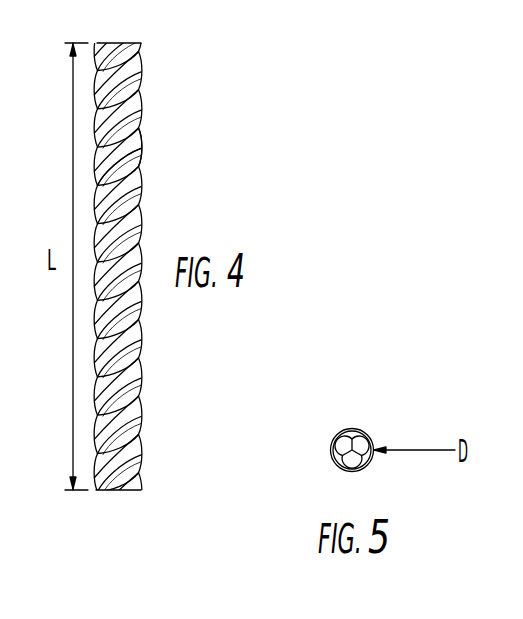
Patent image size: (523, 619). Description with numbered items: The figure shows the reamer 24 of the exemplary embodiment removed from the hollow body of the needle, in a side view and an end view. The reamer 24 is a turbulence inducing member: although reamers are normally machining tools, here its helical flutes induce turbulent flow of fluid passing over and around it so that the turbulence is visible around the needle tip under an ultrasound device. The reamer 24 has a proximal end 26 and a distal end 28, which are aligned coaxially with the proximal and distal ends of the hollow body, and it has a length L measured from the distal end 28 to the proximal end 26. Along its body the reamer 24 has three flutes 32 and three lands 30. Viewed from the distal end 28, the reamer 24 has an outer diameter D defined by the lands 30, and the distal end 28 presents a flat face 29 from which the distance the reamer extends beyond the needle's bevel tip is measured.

In FIG. 4, the reamer 24 is at (157, 337).
In FIG. 4, the distal end 28 is at (119, 43).
In FIG. 4, the proximal end 26 is at (116, 490).
In FIG. 4, the lands 30 is at (140, 136).
In FIG. 4, the flutes 32 is at (117, 160).
In FIG. 5, the flat face 29 is at (372, 458).